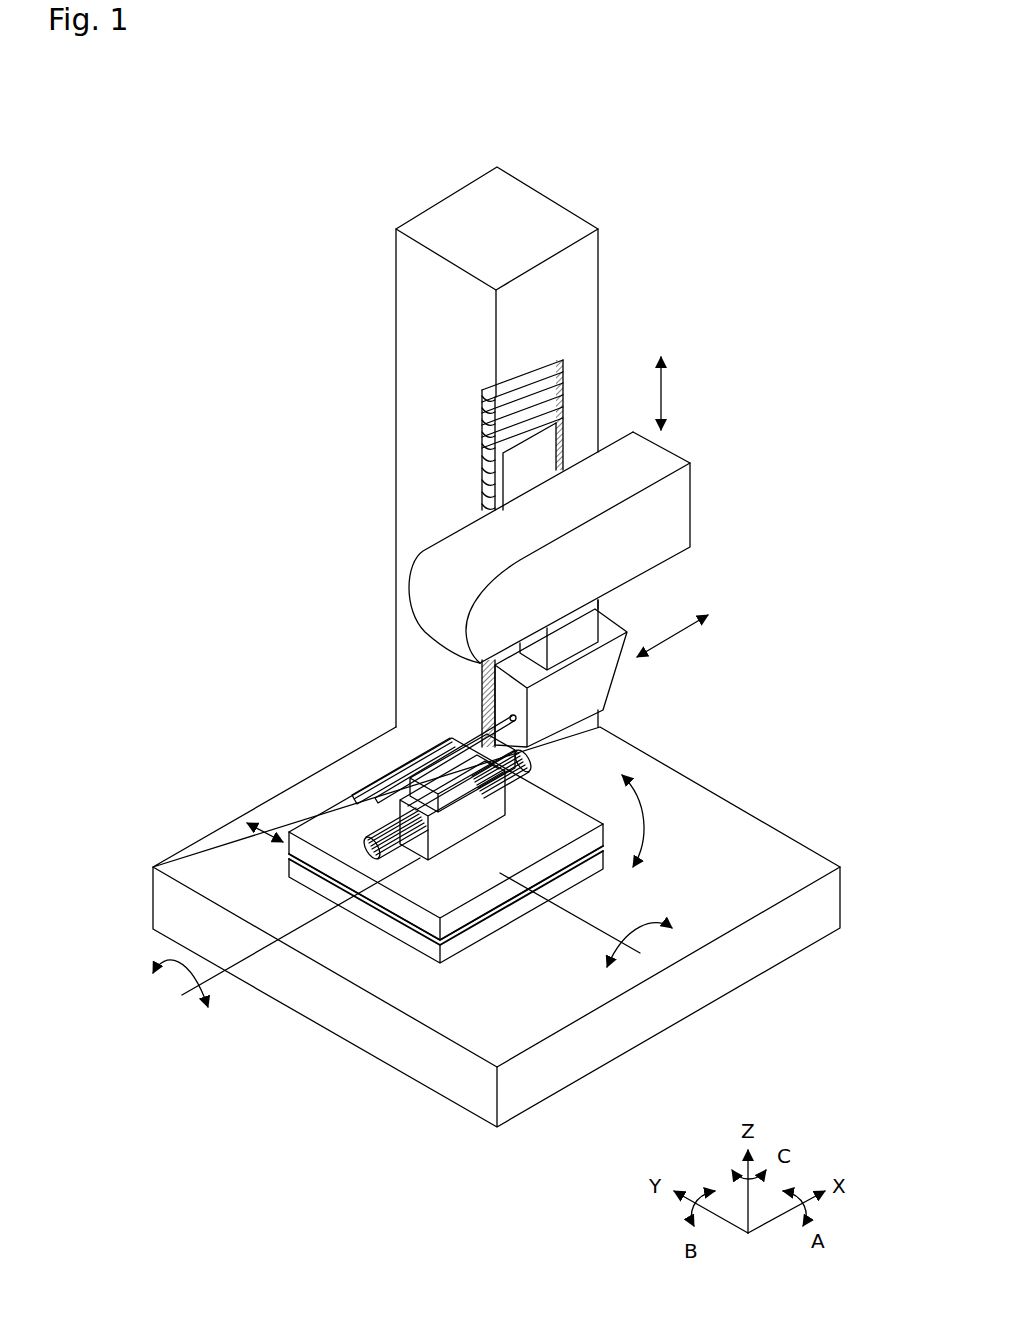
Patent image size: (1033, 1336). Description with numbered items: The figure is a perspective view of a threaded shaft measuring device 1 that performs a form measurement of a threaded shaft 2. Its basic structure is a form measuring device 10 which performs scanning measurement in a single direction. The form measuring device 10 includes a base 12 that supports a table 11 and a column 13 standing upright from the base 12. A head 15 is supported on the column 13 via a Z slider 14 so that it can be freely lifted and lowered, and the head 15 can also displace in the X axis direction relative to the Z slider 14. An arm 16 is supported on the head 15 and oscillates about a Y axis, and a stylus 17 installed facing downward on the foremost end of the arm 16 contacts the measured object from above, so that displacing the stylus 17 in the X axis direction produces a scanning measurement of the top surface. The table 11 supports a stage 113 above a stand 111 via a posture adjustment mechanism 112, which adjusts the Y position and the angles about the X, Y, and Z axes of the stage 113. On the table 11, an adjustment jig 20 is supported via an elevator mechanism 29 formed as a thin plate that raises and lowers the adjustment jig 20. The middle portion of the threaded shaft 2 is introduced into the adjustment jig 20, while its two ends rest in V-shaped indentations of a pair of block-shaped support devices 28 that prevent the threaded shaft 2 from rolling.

The threaded shaft measuring device 1 is at (252, 432).
The form measuring device 10 is at (625, 272).
The table 11 is at (300, 803).
The base 12 is at (215, 847).
The column 13 is at (407, 372).
The Z slider 14 is at (683, 506).
The head 15 is at (603, 698).
The arm 16 is at (368, 797).
The stylus 17 is at (378, 805).
The stand 111 is at (380, 918).
The posture adjustment mechanism 112 is at (398, 927).
The stage 113 is at (436, 935).
The threaded shaft 2 is at (523, 813).
The adjustment jig 20 is at (477, 847).
The support device 28 is at (528, 790).
The elevator mechanism 29 is at (443, 860).